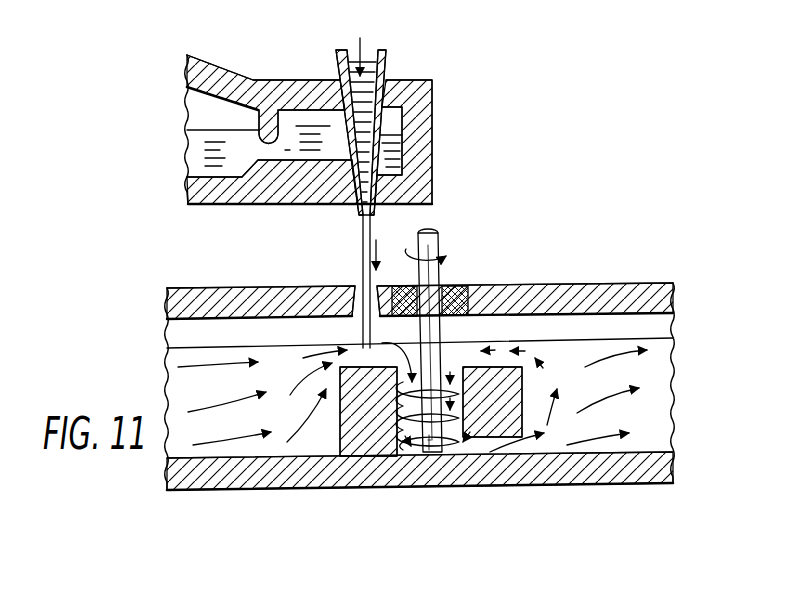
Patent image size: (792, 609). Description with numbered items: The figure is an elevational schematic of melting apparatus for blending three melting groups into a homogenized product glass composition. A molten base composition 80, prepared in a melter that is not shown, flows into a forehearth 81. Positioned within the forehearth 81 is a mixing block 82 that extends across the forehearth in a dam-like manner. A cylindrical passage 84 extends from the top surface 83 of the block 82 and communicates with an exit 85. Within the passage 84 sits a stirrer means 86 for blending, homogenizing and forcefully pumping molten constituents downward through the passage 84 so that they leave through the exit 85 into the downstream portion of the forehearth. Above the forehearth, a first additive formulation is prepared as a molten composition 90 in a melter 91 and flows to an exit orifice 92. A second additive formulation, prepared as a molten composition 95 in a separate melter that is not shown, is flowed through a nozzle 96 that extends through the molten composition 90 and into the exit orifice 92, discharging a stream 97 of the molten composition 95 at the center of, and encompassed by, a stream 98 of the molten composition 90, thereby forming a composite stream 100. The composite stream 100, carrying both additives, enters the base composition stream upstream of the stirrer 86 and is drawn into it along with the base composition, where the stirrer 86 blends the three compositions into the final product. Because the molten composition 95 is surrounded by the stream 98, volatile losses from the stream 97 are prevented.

The molten base composition 80 is at (192, 356).
The forehearth 81 is at (170, 494).
The mixing block 82 is at (342, 429).
The top surface 83 is at (498, 365).
The cylindrical passage 84 is at (407, 452).
The exit 85 is at (493, 438).
The stirrer means 86 is at (452, 362).
The molten composition 90 is at (193, 133).
The melter 91 is at (203, 206).
The exit orifice 92 is at (360, 207).
The molten composition 95 is at (352, 52).
The nozzle 96 is at (388, 56).
The stream 97 is at (361, 217).
The stream 98 is at (372, 215).
The composite stream 100 is at (356, 328).